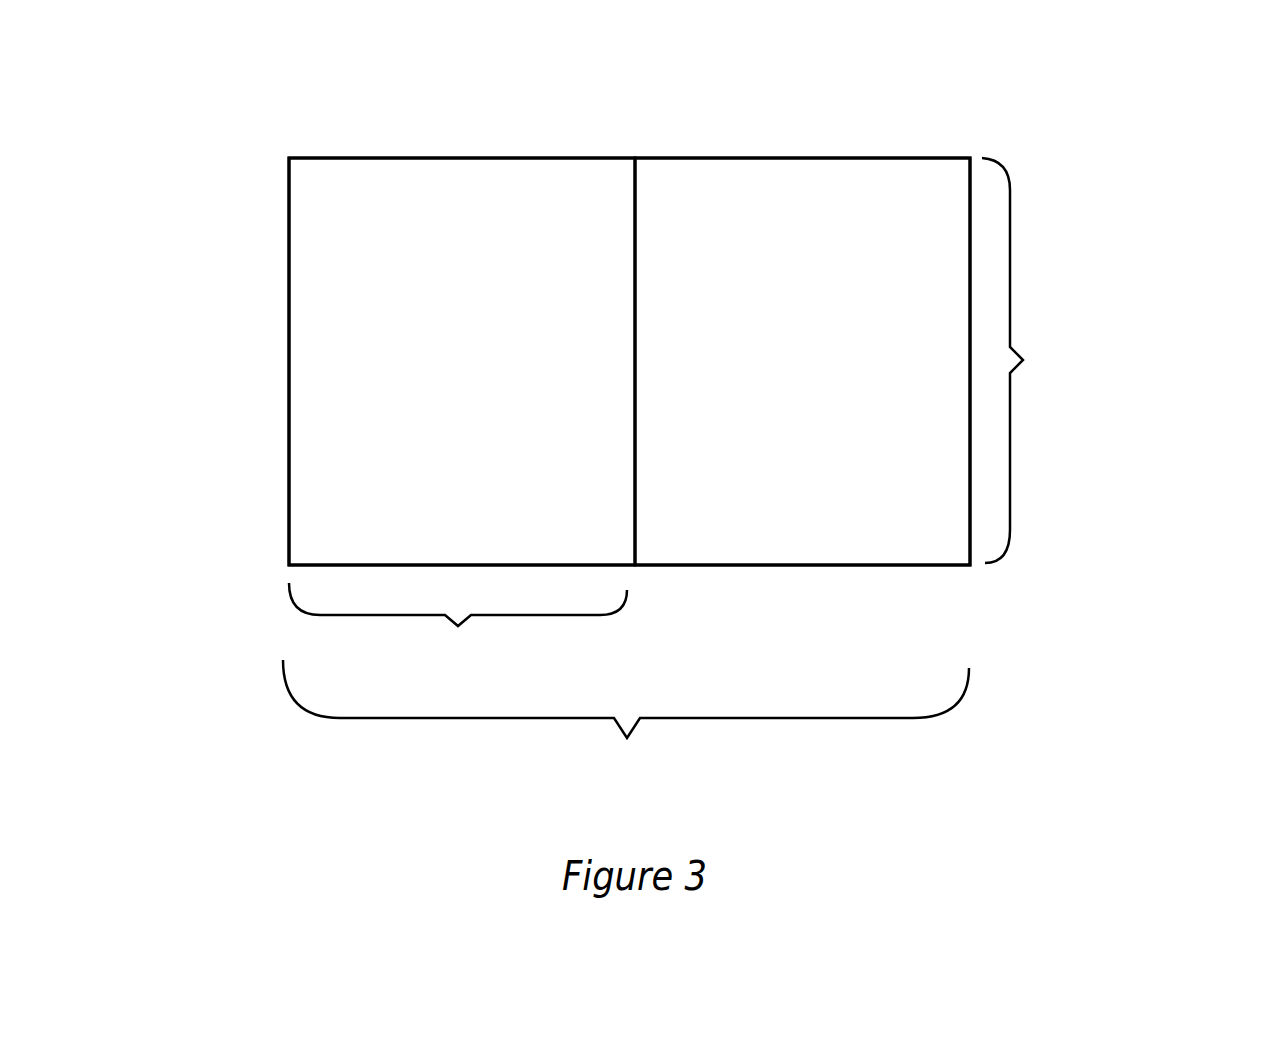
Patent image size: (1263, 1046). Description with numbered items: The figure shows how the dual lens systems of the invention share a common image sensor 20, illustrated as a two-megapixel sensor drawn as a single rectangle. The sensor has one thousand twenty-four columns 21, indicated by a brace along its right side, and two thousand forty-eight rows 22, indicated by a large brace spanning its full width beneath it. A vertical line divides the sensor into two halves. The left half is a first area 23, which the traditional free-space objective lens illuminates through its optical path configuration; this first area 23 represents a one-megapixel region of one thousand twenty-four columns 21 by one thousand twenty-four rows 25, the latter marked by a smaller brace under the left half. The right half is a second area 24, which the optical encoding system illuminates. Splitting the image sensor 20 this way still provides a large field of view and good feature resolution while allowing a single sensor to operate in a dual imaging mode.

The image sensor 20 is at (657, 122).
The first area 23 is at (297, 158).
The second area 24 is at (940, 155).
The columns 21 is at (1105, 327).
The rows 25 is at (285, 603).
The rows 22 is at (350, 737).